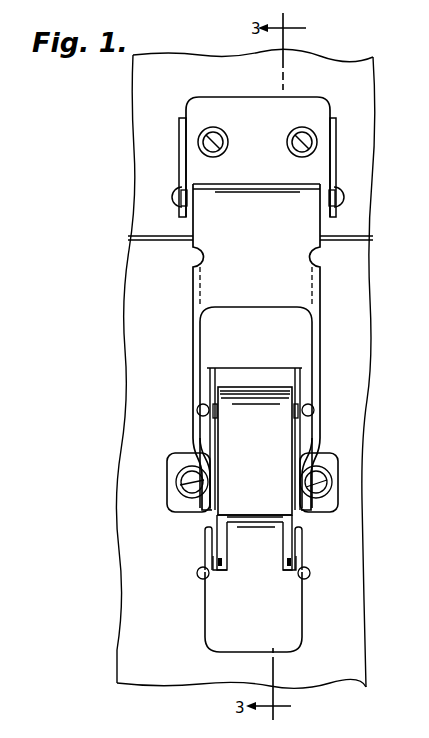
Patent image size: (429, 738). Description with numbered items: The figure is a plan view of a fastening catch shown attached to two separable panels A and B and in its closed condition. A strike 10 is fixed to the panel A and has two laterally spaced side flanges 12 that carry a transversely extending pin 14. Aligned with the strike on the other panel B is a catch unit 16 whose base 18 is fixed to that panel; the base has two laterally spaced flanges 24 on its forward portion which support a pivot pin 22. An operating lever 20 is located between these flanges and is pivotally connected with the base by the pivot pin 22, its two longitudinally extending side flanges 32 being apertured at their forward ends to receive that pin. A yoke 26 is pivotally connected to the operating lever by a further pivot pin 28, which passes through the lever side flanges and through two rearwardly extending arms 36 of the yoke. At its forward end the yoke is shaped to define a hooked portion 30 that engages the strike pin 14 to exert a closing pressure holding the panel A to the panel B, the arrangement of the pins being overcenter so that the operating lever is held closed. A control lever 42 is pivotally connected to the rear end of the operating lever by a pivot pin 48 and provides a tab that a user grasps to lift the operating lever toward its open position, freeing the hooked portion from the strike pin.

The strike 10 is at (352, 107).
The side flanges 12 is at (179, 139).
The pin 14 is at (338, 198).
The catch unit 16 is at (362, 382).
The base 18 is at (248, 368).
The operating lever 20 is at (290, 430).
The pivot pin 22 is at (305, 401).
The flanges 24 is at (212, 373).
The yoke 26 is at (303, 294).
The pivot pin 28 is at (308, 498).
The hooked portion 30 is at (235, 184).
The side flanges 32 is at (212, 545).
The arms 36 is at (192, 334).
The control lever 42 is at (294, 612).
The pivot pin 48 is at (310, 574).
The panel A is at (133, 95).
The panel B is at (128, 265).